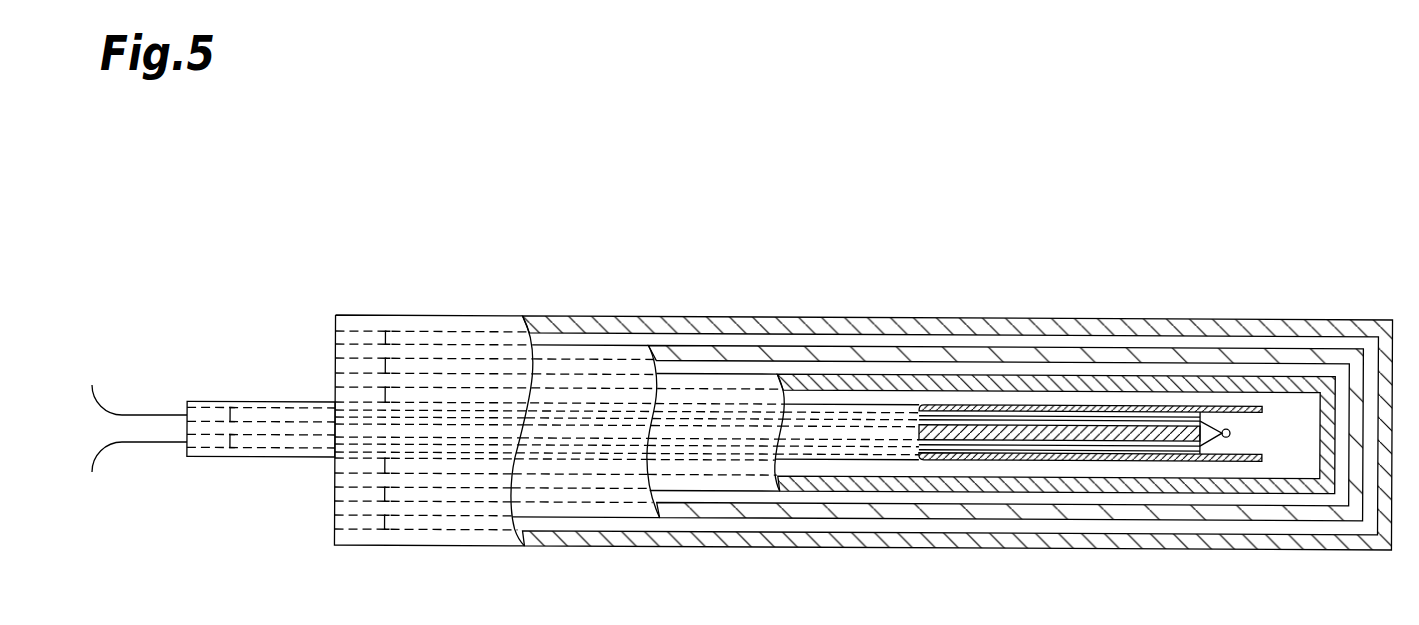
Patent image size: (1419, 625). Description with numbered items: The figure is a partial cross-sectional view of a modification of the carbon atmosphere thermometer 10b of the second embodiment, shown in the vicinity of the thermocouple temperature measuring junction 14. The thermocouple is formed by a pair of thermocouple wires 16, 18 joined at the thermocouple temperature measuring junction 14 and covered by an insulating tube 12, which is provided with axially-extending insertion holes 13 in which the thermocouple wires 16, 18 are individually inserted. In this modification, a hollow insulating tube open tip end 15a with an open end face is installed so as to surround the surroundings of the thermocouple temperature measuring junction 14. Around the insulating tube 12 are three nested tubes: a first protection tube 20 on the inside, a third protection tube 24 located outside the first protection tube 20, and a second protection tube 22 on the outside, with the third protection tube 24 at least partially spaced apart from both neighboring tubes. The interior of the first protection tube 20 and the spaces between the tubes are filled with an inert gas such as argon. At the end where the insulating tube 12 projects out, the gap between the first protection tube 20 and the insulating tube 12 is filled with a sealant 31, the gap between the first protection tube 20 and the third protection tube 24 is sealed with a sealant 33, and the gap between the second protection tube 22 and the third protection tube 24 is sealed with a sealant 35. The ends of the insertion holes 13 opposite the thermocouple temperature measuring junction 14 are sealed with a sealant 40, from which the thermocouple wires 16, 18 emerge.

The carbon atmosphere thermometer 10b is at (1000, 140).
The insulating tube 12 is at (840, 405).
The insertion holes 13 is at (962, 410).
The thermocouple temperature measuring junction 14 is at (1223, 430).
The hollow insulating tube open tip end 15a is at (1235, 408).
The thermocouple wire 16 is at (103, 408).
The thermocouple wire 18 is at (120, 443).
The first protection tube 20 is at (1028, 385).
The second protection tube 22 is at (1197, 327).
The third protection tube 24 is at (1133, 353).
The sealant 31 is at (333, 465).
The sealant 33 is at (333, 493).
The sealant 35 is at (333, 522).
The sealant 40 is at (207, 408).